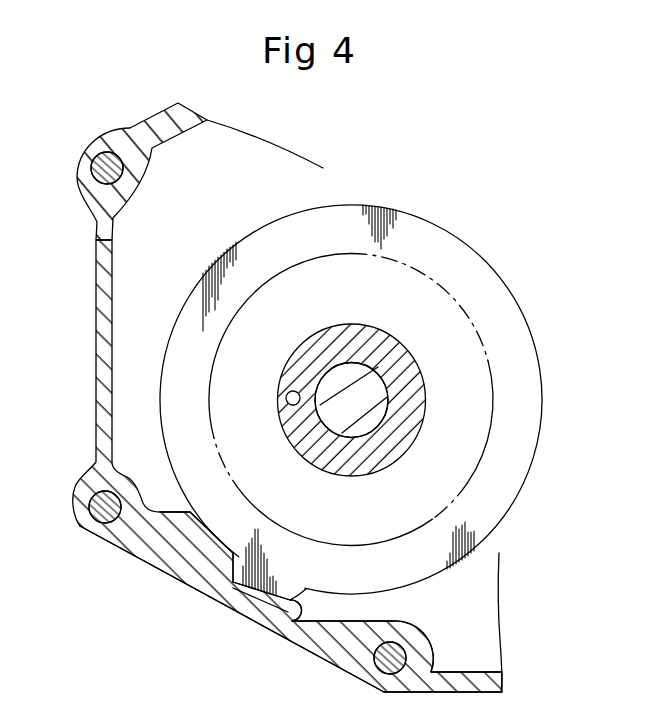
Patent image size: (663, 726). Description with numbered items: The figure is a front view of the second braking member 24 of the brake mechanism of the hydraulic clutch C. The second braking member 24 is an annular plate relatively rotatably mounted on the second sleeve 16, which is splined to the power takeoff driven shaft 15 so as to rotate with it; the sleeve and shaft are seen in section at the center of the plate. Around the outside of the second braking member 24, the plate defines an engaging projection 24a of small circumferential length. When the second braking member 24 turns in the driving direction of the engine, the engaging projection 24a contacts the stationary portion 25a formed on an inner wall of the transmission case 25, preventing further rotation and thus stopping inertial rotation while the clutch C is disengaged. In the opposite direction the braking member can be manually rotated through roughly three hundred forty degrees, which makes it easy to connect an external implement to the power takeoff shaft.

The second braking member 24 is at (434, 224).
The engaging projection 24a is at (291, 619).
The transmission case 25 is at (96, 357).
The stationary portion 25a is at (220, 563).
The second sleeve 16 is at (368, 330).
The power takeoff driven shaft 15 is at (380, 402).
The hydraulic clutch C is at (482, 340).